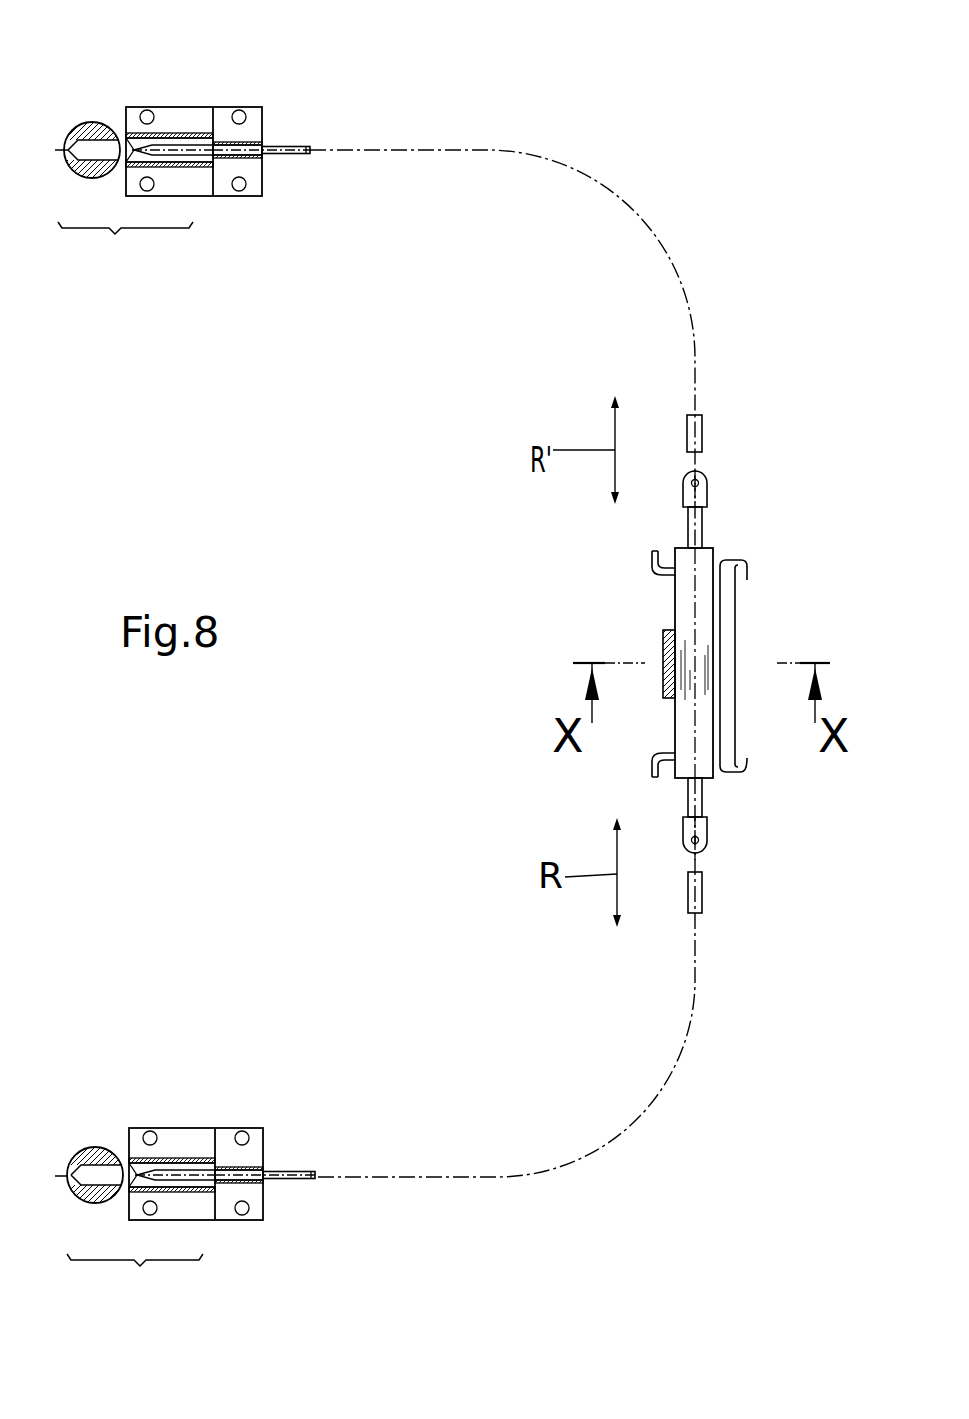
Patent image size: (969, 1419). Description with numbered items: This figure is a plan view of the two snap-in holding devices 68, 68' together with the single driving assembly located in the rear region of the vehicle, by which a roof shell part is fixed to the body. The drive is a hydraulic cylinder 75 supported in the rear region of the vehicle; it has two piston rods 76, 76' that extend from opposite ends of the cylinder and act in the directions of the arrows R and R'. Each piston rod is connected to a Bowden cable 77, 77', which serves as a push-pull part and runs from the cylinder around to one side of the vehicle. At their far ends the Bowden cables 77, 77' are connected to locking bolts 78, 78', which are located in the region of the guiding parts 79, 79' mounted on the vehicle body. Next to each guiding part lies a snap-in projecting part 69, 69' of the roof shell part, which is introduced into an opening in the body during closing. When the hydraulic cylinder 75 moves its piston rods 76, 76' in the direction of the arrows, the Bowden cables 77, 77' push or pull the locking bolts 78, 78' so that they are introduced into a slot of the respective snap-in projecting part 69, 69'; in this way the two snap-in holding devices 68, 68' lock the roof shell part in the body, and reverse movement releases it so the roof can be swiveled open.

The snap-in holding device 68 is at (135, 1299).
The snap-in holding device 68' is at (125, 268).
The snap-in projecting part 69 is at (117, 1106).
The snap-in projecting part 69' is at (109, 99).
The hydraulic cylinder 75 is at (688, 597).
The piston rod 76 is at (740, 835).
The piston rod 76' is at (737, 492).
The Bowden cable 77 is at (292, 1232).
The Bowden cable 77' is at (290, 223).
The locking bolt 78 is at (196, 1107).
The locking bolt 78' is at (199, 228).
The guiding part 79 is at (203, 1231).
The guiding part 79' is at (196, 98).